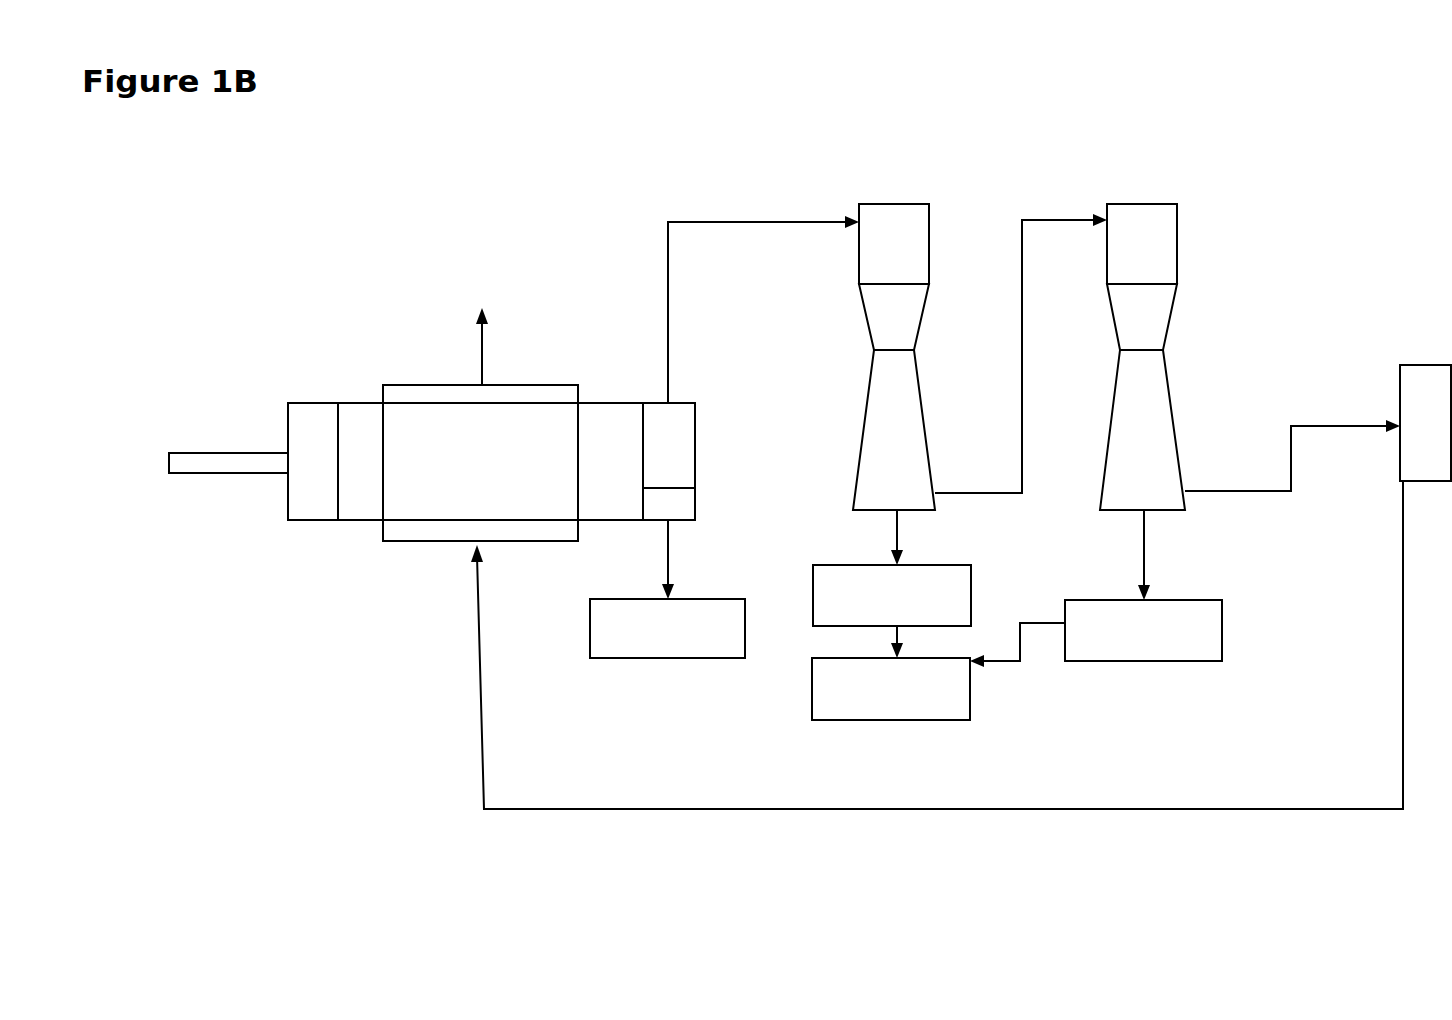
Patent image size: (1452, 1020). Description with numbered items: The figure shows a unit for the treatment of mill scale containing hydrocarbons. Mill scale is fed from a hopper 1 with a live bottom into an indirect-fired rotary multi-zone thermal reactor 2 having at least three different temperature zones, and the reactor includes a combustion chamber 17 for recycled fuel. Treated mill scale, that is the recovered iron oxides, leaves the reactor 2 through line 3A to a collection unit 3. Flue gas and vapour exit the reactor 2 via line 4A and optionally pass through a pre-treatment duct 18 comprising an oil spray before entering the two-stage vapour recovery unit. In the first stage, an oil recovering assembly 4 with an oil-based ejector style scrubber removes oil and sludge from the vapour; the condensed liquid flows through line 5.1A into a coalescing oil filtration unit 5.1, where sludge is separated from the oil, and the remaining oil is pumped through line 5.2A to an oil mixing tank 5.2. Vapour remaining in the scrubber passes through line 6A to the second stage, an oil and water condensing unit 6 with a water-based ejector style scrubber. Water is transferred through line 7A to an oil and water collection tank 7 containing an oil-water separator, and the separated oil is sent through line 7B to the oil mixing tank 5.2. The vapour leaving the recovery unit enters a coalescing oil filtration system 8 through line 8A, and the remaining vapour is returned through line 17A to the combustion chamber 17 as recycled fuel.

The hopper 1 is at (197, 462).
The indirect-fired rotary multi-zone thermal reactor 2 is at (353, 425).
The combustion chamber 17 is at (429, 543).
The collection unit for the treated mill scale 3 is at (667, 643).
The line 3A is at (660, 567).
The oil recovering assembly 4 is at (892, 233).
The line 4A is at (657, 251).
The pre-treatment duct 18 is at (741, 210).
The coalescing oil filtration unit 5.1 is at (818, 593).
The line 5.1A is at (878, 540).
The oil mixing tank 5.2 is at (903, 708).
The line 5.2A is at (887, 640).
The oil and water condensing unit 6 is at (1142, 233).
The line 6A is at (1057, 227).
The oil and water collection tank 7 is at (1149, 645).
The line 7A is at (1138, 552).
The line 7B is at (1029, 670).
The coalescing oil filtration system 8 is at (1426, 357).
The line 8A is at (1284, 499).
The line 17A is at (970, 818).